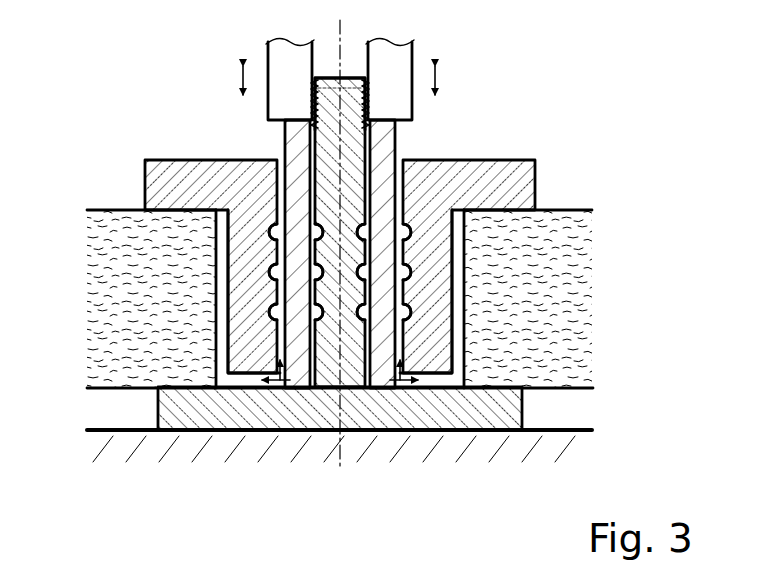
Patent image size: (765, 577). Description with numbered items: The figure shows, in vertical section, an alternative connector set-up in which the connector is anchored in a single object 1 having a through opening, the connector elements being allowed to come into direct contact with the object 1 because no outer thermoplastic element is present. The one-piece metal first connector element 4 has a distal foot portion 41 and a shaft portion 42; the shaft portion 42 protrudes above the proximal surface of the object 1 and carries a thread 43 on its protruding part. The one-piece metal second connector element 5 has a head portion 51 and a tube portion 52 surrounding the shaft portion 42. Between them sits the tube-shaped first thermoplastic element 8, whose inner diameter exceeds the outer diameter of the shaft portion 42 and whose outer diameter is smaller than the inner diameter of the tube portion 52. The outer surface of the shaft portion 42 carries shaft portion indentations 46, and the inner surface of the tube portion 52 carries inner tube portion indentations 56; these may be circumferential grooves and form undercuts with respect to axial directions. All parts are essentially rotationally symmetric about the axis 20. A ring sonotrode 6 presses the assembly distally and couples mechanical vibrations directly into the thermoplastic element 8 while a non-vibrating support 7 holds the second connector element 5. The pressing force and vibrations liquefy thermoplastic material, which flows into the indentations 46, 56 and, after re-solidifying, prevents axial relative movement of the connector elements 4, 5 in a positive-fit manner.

The object 1 is at (528, 240).
The first connector element 4 is at (426, 301).
The second connector element 5 is at (367, 334).
The sonotrode 6 is at (408, 43).
The non-vibrating support 7 is at (522, 450).
The first thermoplastic element 8 is at (377, 310).
The axis 20 is at (313, 90).
The foot portion 41 is at (470, 408).
The shaft portion 42 is at (338, 293).
The thread 43 is at (398, 108).
The shaft portion indentations 46 is at (357, 272).
The head portion 51 is at (208, 182).
The tube portion 52 is at (253, 277).
The inner tube portion indentations 56 is at (403, 278).